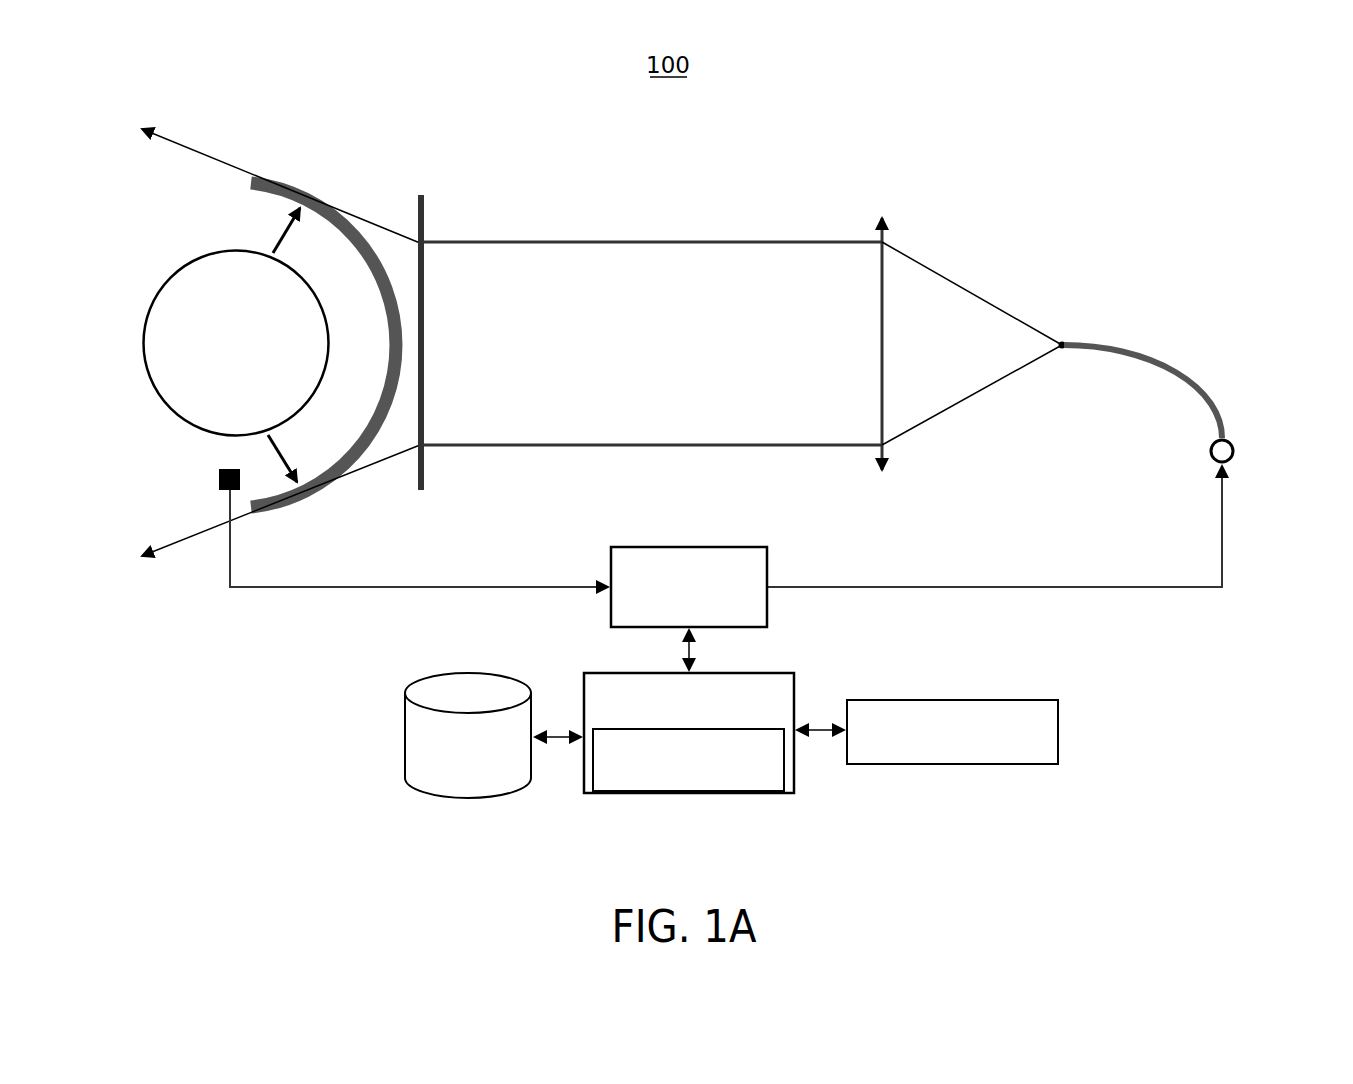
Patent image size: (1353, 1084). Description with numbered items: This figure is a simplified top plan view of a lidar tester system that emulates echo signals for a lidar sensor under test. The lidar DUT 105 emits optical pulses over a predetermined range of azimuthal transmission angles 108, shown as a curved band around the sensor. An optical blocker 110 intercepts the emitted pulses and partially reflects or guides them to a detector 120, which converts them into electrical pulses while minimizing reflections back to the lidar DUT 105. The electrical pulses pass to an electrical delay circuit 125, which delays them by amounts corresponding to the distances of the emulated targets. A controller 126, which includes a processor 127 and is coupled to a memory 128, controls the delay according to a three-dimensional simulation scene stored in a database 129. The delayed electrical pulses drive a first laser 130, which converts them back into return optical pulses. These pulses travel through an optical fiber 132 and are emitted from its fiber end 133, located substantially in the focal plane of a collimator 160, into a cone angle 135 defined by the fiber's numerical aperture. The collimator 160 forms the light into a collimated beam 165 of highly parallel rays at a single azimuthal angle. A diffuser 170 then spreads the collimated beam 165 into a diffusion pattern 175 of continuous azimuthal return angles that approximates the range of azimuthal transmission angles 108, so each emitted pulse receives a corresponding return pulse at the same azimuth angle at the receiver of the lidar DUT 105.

The lidar DUT 105 is at (211, 322).
The range of azimuthal transmission angles 108 is at (323, 320).
The optical blocker 110 is at (281, 510).
The detector 120 is at (183, 460).
The electrical delay circuit 125 is at (689, 548).
The controller 126 is at (715, 699).
The processor 127 is at (734, 802).
The memory 128 is at (952, 699).
The database 129 is at (450, 761).
The first laser 130 is at (1260, 417).
The optical fiber 132 is at (1155, 369).
The fiber end 133 is at (1103, 309).
The cone angle 135 is at (972, 331).
The collimator 160 is at (885, 350).
The collimated beam 165 is at (651, 308).
The diffuser 170 is at (432, 353).
The diffusion pattern 175 is at (281, 167).